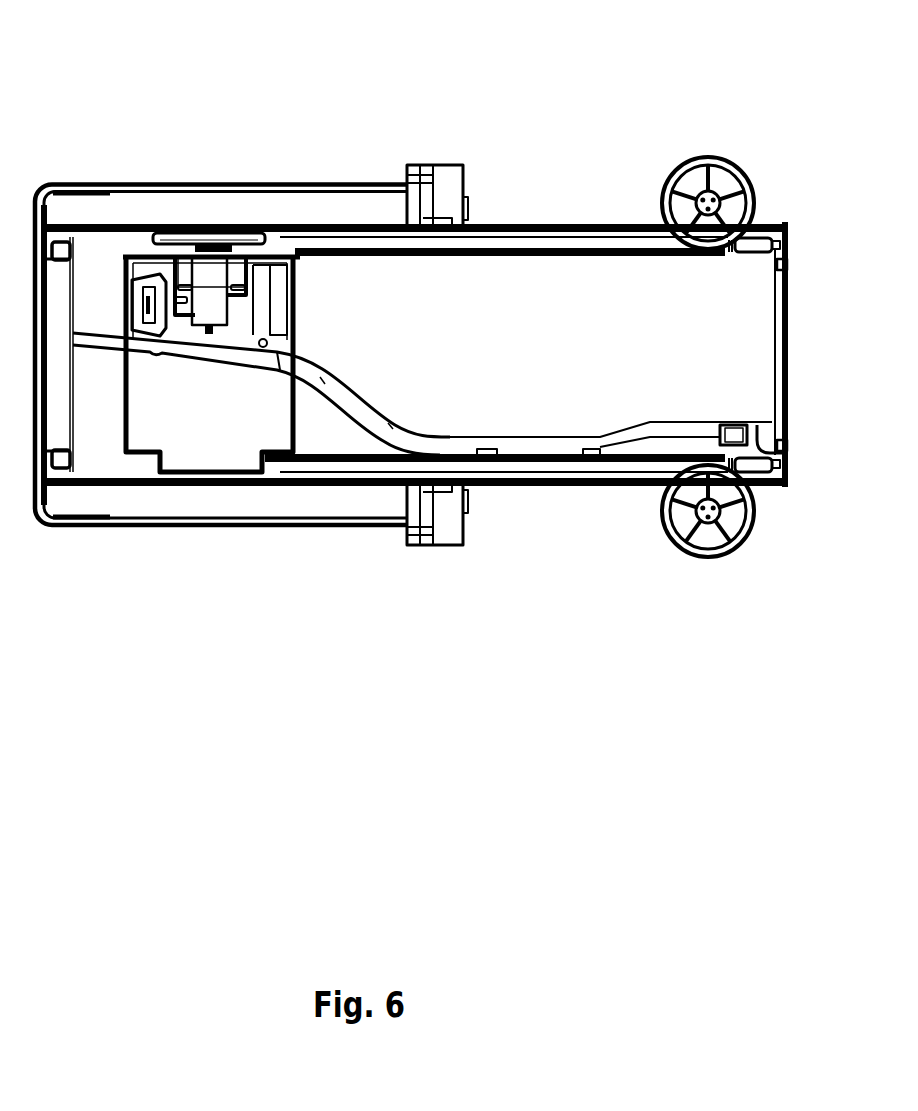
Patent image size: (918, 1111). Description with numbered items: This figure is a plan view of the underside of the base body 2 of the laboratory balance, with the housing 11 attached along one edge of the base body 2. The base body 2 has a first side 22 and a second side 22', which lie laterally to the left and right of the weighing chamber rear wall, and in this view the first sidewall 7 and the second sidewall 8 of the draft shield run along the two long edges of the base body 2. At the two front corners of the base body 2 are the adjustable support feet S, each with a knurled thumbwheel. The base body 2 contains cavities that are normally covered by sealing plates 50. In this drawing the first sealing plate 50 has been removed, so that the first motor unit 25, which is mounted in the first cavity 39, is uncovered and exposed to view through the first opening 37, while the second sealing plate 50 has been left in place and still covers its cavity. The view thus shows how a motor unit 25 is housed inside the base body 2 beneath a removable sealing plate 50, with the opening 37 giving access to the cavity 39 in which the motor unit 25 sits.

The base body 2 is at (482, 345).
The first sidewall 7 is at (532, 223).
The second sidewall 8 is at (549, 488).
The housing 11 is at (79, 535).
The first side 22 is at (395, 178).
The second side 22' is at (399, 535).
The first motor unit 25 is at (207, 300).
The first opening 37 is at (266, 262).
The first cavity 39 is at (238, 312).
The sealing plate 50 is at (206, 432).
The support feet S is at (708, 157).